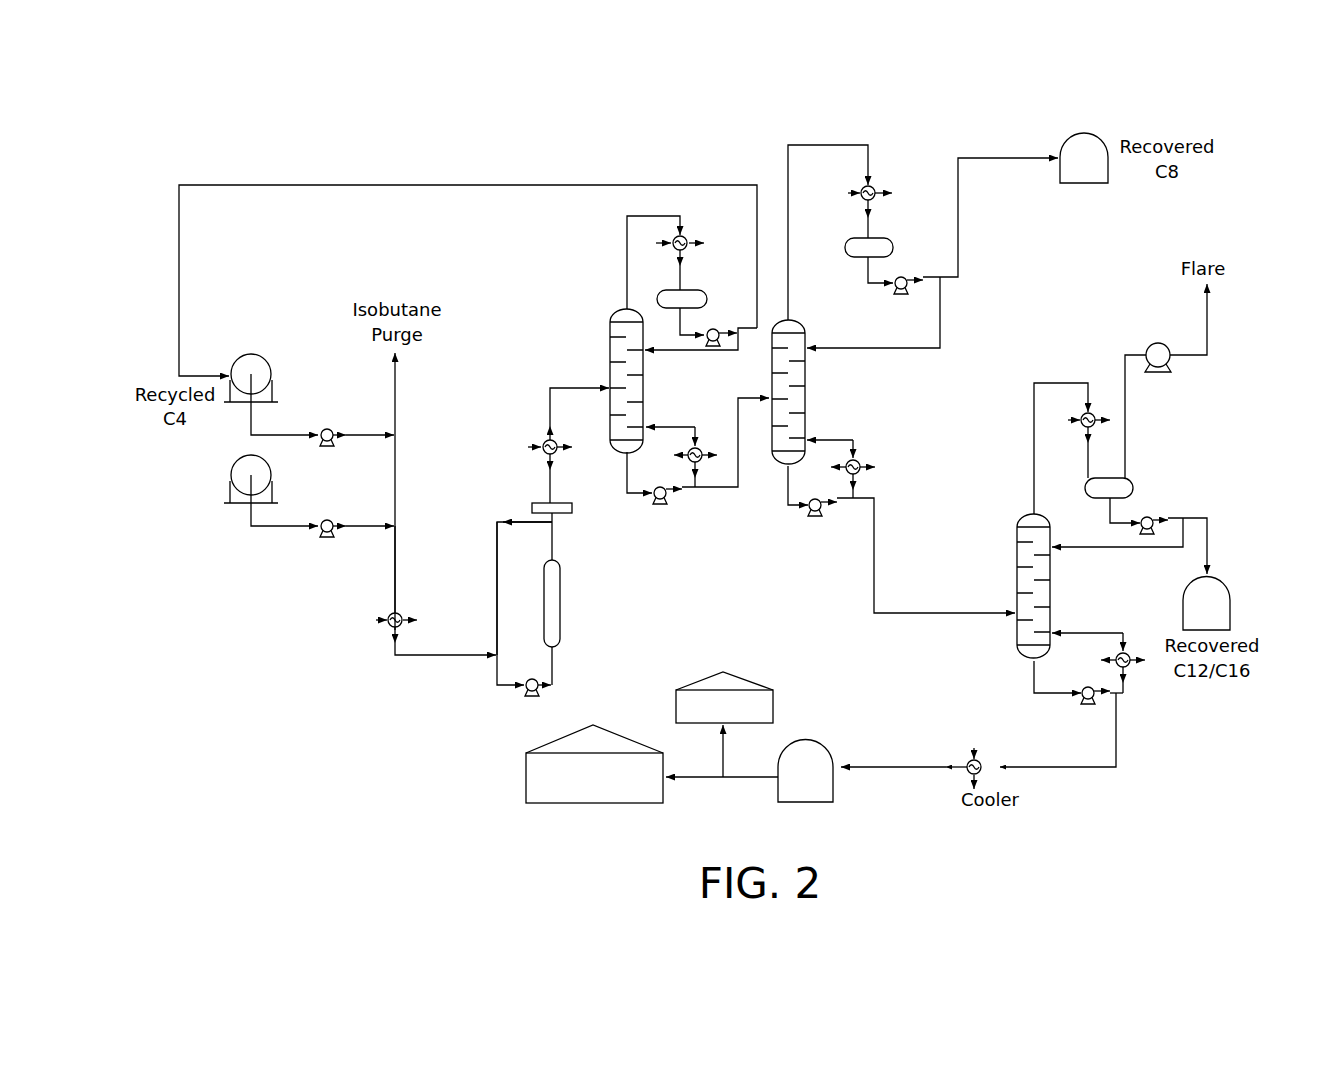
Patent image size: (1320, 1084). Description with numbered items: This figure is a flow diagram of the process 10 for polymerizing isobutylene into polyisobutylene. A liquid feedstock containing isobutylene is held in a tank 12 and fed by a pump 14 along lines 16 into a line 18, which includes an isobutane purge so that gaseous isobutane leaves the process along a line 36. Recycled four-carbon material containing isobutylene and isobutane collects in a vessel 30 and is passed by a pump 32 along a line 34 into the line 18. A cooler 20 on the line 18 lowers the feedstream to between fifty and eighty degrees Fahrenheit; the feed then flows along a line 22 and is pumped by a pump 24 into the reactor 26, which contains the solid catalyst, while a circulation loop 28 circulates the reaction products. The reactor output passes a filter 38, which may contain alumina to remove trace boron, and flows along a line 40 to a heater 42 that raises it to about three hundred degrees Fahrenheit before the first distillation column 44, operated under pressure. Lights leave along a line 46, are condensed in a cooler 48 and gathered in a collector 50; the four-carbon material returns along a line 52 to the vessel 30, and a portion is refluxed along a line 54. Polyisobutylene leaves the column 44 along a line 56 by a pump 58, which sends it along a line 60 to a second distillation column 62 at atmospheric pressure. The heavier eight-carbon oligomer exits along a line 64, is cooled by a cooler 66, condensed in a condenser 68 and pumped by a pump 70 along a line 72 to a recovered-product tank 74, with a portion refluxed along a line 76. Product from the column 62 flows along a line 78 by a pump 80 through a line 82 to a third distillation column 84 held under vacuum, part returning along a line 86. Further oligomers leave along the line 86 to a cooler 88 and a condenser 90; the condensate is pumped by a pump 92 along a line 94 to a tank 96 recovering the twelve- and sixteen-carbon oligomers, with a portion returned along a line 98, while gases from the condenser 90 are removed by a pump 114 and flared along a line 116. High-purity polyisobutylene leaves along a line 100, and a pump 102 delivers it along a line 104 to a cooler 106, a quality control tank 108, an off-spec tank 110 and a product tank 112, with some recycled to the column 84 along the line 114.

The process 10 is at (681, 133).
The tank 12 is at (271, 470).
The pump 14 is at (325, 537).
The lines 16 is at (365, 531).
The line 18 is at (396, 568).
The cooler 20 is at (402, 616).
The line 22 is at (445, 657).
The pump 24 is at (540, 688).
The reactor 26 is at (560, 625).
The circulation loop 28 is at (497, 550).
The vessel 30 is at (265, 358).
The pump 32 is at (327, 428).
The line 34 is at (368, 440).
The line 36 is at (396, 403).
The filter 38 is at (573, 511).
The line 40 is at (552, 487).
The heater 42 is at (543, 440).
The first distillation column 44 is at (610, 350).
The line 46 is at (627, 255).
The cooler 48 is at (687, 240).
The collector 50 is at (697, 290).
The line 52 is at (722, 185).
The line 54 is at (690, 352).
The line 56 is at (630, 482).
The pump 58 is at (658, 505).
The line 60 is at (722, 488).
The second distillation column 62 is at (700, 441).
The line 64 is at (790, 272).
The cooler 66 is at (875, 188).
The condenser 68 is at (887, 238).
The pump 70 is at (903, 293).
The line 72 is at (958, 215).
The recovered C8 tank 74 is at (1085, 183).
The line 76 is at (940, 318).
The line 78 is at (786, 504).
The pump 80 is at (812, 516).
The transfer line 82 is at (875, 555).
The third distillation column 84 is at (1017, 580).
The line 86 is at (856, 445).
The cooler 88 is at (1094, 413).
The condenser 90 is at (1133, 483).
The pump 92 is at (1155, 517).
The line 94 is at (1207, 530).
The tank 96 is at (1230, 608).
The line 98 is at (1100, 548).
The line 100 is at (1034, 690).
The pump 102 is at (1082, 688).
The line 104 is at (1085, 769).
The cooler 106 is at (980, 762).
The quality control tank 108 is at (832, 745).
The off-spec tank 110 is at (775, 700).
The polyisobutylene product tank 112 is at (645, 805).
The pump 114 is at (1123, 630).
The line 116 is at (1208, 315).